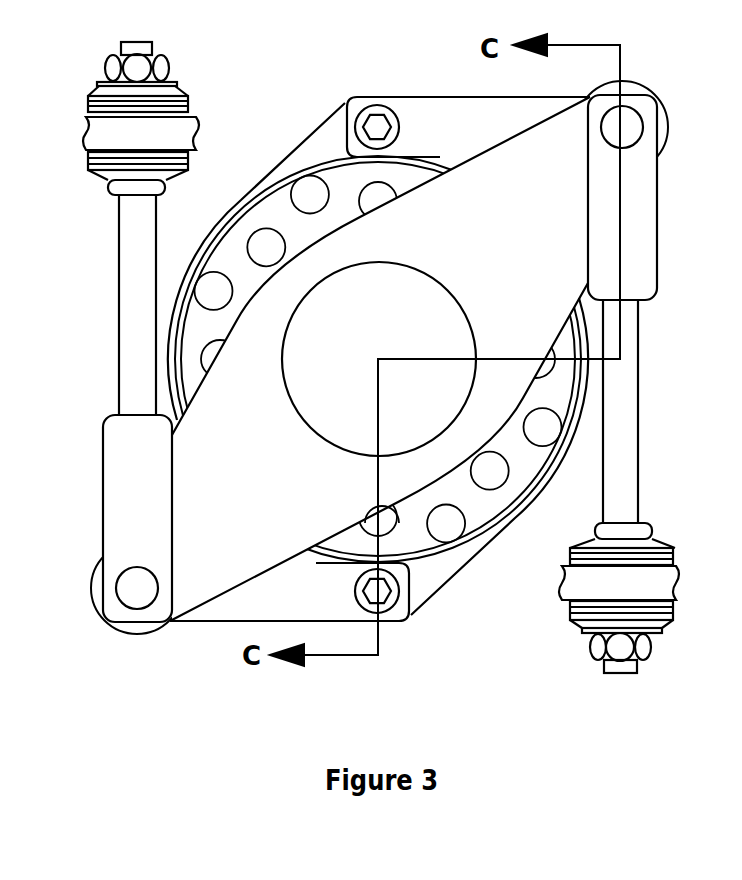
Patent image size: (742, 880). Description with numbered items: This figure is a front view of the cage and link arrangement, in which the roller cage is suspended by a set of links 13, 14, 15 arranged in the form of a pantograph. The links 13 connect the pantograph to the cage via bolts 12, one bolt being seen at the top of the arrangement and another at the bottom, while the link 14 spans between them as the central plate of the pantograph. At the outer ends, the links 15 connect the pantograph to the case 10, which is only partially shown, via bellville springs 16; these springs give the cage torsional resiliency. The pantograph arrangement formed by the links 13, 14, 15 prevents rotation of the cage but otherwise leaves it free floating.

The case 10 is at (371, 357).
The bolts 12 is at (383, 593).
The links 13 is at (427, 130).
The links 14 is at (482, 207).
The links 15 is at (140, 255).
The bellville springs 16 is at (90, 102).